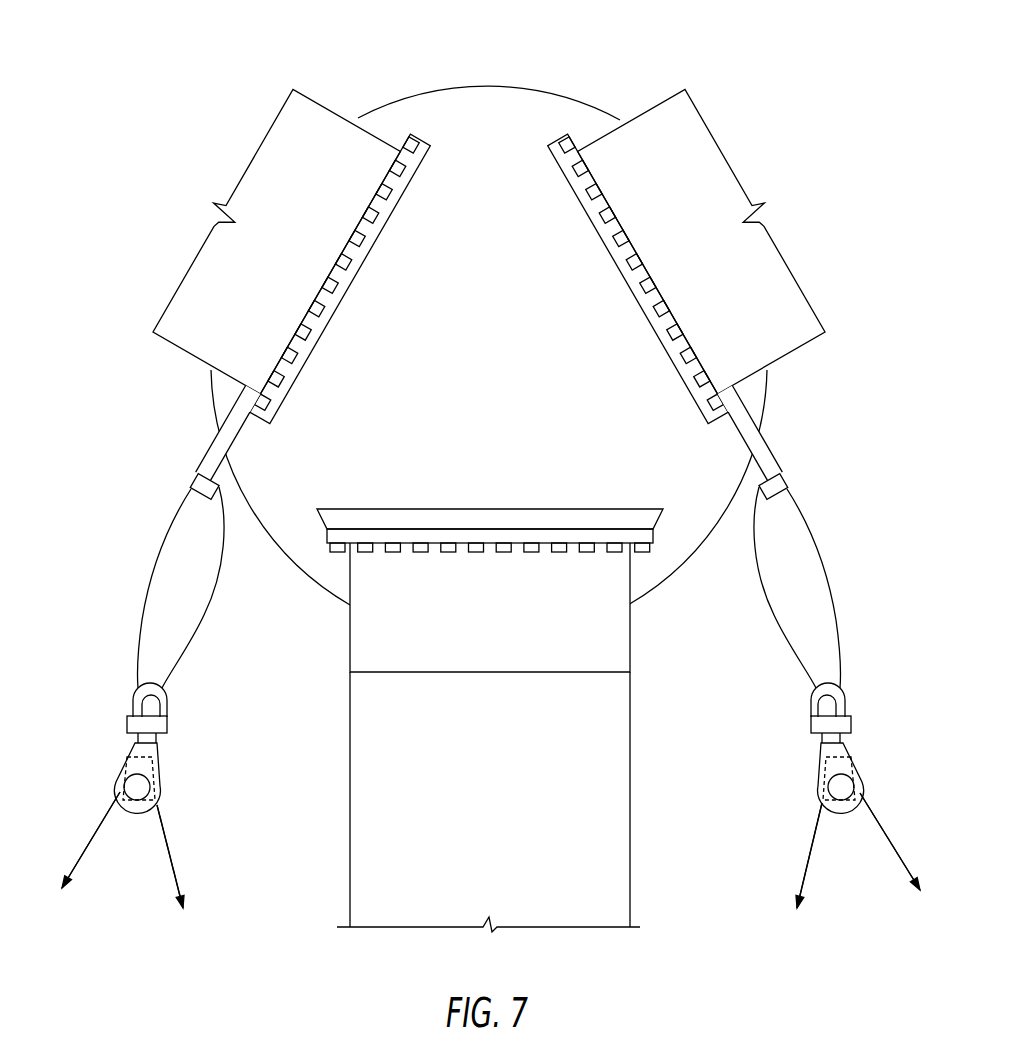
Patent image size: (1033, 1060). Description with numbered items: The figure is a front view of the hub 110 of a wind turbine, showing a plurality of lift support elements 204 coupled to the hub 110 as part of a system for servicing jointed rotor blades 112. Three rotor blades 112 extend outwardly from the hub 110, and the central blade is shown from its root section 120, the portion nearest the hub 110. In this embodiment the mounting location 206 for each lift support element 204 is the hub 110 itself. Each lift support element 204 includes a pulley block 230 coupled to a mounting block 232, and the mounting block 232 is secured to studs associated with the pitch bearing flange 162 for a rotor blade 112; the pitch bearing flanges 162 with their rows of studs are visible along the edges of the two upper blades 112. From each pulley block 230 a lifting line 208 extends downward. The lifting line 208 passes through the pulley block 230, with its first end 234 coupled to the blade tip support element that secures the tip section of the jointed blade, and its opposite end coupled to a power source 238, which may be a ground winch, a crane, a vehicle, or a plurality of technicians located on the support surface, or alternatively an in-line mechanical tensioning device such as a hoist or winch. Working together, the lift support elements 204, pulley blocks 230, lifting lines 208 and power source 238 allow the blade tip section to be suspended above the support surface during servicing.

The hub 110 is at (428, 95).
The rotor blade 112 is at (268, 183).
The root section 120 is at (590, 867).
The pitch bearing flange 162 is at (280, 392).
The lift support element 204 is at (114, 534).
The mounting location 206 is at (135, 401).
The lifting line 208 is at (92, 823).
The pulley block 230 is at (130, 750).
The mounting block 232 is at (235, 436).
The first end 234 is at (489, 874).
The power source 238 is at (488, 860).